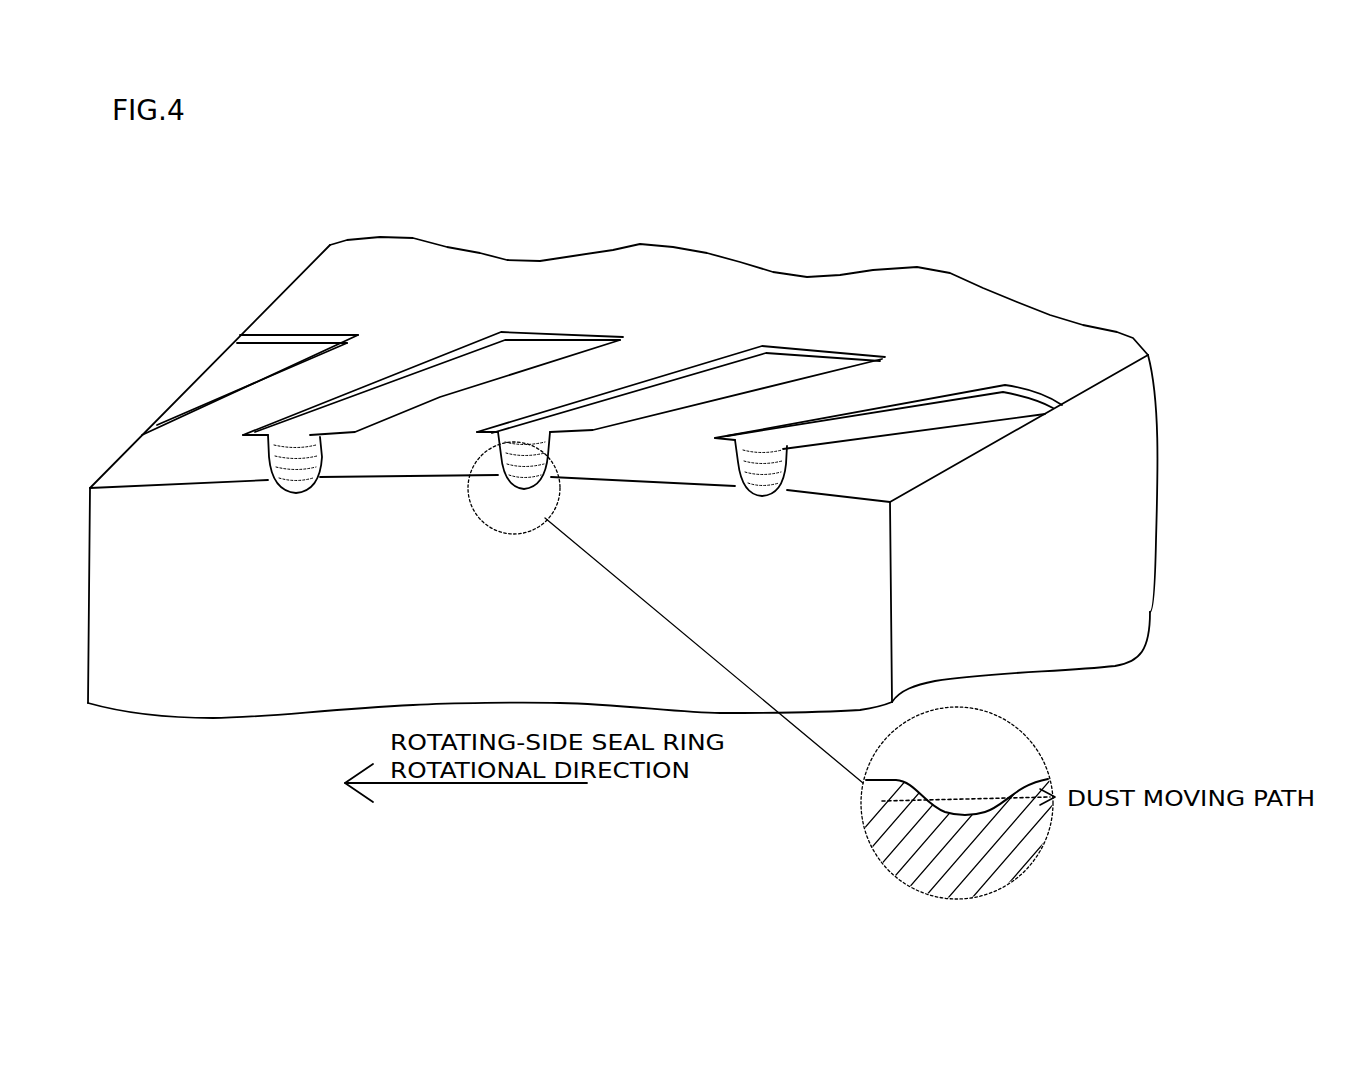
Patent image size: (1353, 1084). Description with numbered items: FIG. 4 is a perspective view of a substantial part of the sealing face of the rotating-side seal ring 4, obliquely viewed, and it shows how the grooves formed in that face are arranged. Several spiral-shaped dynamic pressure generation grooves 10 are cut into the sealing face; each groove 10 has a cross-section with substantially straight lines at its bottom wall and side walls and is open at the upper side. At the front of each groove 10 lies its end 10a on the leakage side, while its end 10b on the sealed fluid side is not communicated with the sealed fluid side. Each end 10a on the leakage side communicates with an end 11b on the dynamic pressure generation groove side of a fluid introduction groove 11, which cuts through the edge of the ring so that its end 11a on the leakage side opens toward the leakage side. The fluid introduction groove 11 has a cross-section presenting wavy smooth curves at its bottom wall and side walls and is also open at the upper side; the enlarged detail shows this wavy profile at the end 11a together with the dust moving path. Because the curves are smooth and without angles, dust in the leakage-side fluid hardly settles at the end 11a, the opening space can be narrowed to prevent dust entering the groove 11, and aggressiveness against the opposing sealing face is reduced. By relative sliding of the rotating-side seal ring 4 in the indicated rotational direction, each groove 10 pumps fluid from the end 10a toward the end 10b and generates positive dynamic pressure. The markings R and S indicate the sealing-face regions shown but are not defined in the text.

The rotating-side seal ring 4 is at (513, 258).
The dynamic pressure generation groove 10 is at (557, 330).
The end on the leakage side 10a is at (797, 452).
The end on the sealed fluid side 10b is at (1127, 333).
The fluid introduction groove 11 is at (753, 490).
The end on the leakage side 11a is at (740, 458).
The end on the dynamic pressure generation groove side 11b is at (771, 450).
The land portion R is at (283, 390).
The sliding face S is at (952, 320).